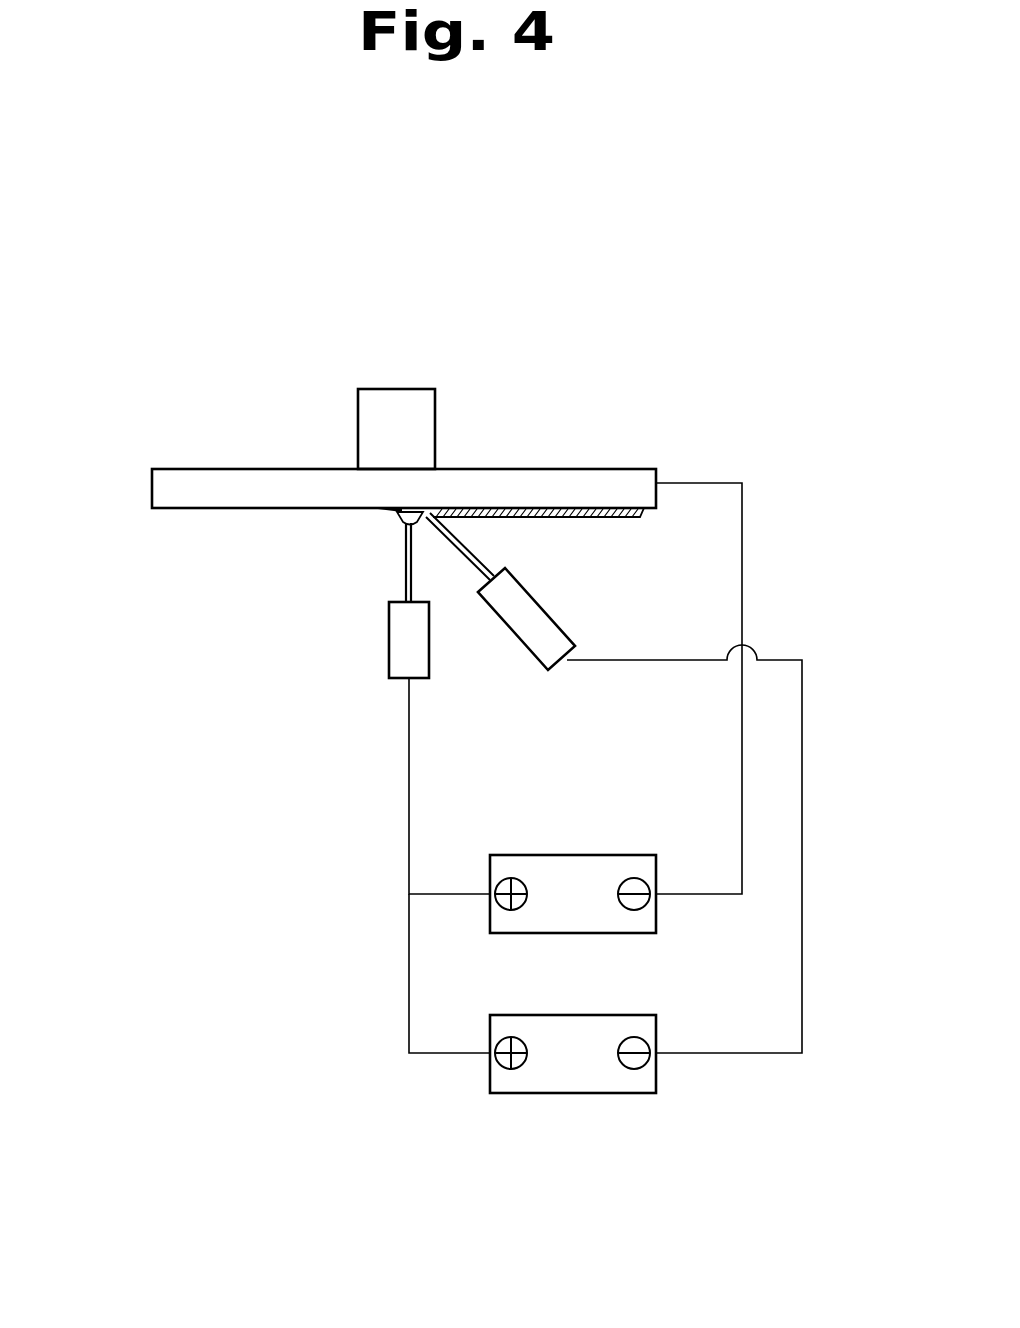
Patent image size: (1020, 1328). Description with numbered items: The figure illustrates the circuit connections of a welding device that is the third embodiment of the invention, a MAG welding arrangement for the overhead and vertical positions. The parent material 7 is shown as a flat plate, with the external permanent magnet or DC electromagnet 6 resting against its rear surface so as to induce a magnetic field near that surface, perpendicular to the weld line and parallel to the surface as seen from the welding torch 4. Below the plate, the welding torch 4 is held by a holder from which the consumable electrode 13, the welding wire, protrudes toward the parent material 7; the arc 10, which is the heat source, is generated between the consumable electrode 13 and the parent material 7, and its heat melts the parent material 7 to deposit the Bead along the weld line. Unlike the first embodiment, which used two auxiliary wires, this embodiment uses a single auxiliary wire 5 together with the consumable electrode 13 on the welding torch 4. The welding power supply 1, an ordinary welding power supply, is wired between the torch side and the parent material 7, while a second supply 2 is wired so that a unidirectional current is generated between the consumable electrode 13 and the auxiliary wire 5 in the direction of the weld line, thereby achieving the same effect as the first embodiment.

The welding power supply 1 is at (540, 863).
The second power source 2 is at (545, 1083).
The welding torch 4 is at (429, 655).
The auxiliary wire 5 is at (412, 572).
The external permanent magnet or DC electromagnet 6 is at (402, 413).
The parent material 7 is at (163, 487).
The arc (heat source) 10 is at (412, 520).
The consumable electrode 13 is at (507, 570).
The bead Bead is at (630, 518).